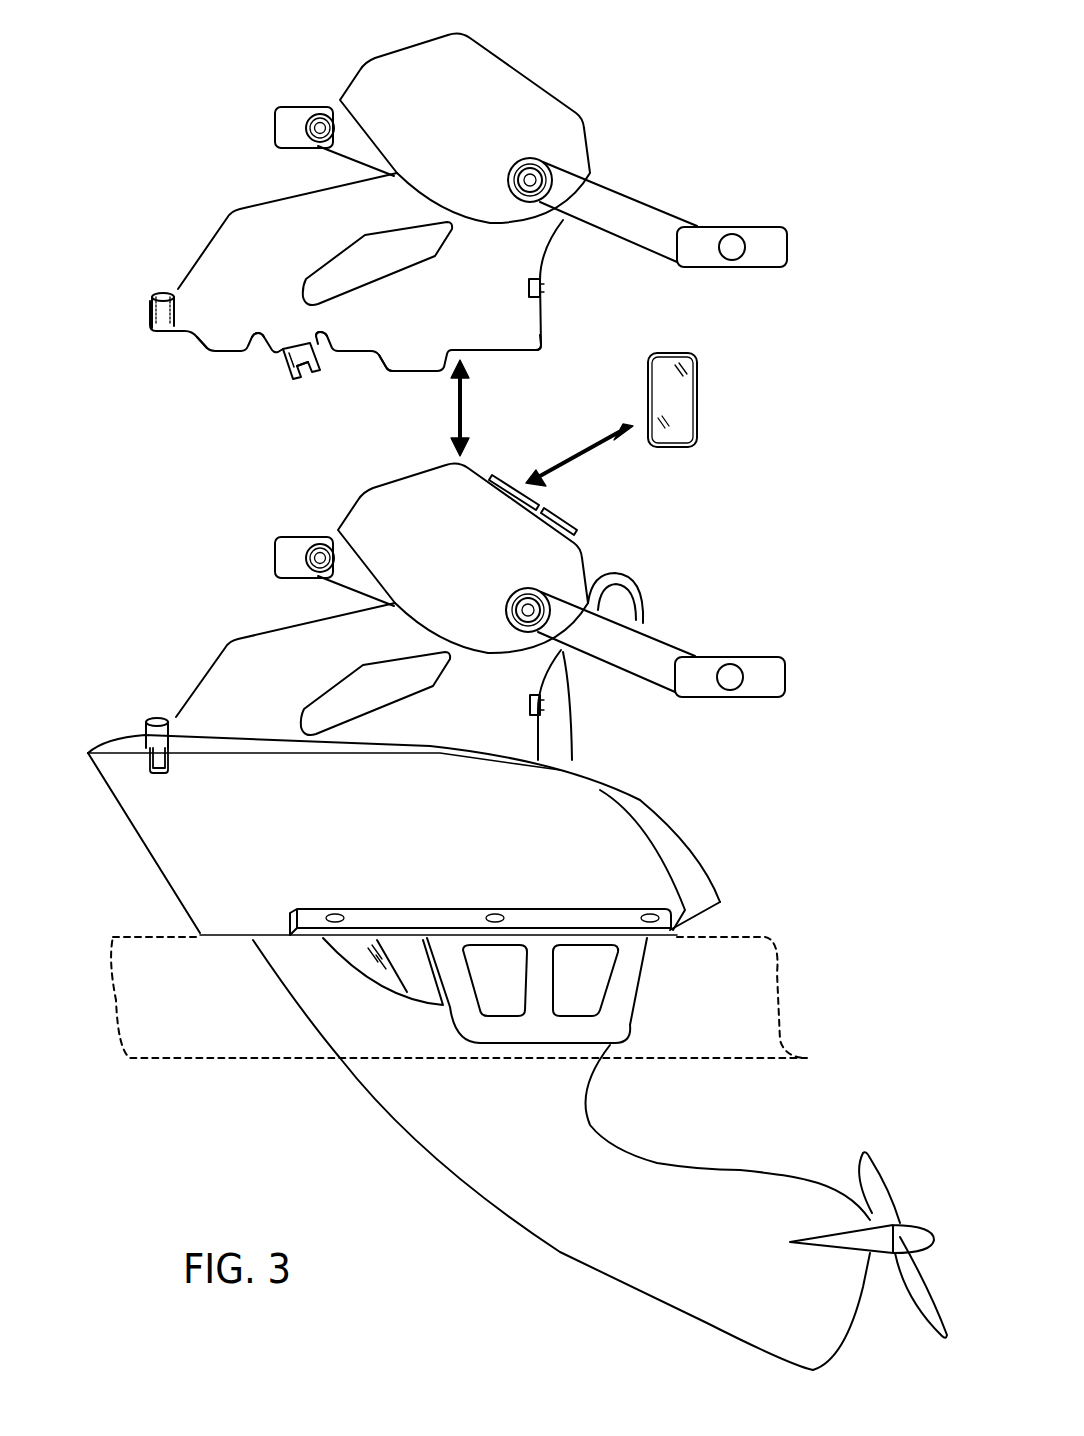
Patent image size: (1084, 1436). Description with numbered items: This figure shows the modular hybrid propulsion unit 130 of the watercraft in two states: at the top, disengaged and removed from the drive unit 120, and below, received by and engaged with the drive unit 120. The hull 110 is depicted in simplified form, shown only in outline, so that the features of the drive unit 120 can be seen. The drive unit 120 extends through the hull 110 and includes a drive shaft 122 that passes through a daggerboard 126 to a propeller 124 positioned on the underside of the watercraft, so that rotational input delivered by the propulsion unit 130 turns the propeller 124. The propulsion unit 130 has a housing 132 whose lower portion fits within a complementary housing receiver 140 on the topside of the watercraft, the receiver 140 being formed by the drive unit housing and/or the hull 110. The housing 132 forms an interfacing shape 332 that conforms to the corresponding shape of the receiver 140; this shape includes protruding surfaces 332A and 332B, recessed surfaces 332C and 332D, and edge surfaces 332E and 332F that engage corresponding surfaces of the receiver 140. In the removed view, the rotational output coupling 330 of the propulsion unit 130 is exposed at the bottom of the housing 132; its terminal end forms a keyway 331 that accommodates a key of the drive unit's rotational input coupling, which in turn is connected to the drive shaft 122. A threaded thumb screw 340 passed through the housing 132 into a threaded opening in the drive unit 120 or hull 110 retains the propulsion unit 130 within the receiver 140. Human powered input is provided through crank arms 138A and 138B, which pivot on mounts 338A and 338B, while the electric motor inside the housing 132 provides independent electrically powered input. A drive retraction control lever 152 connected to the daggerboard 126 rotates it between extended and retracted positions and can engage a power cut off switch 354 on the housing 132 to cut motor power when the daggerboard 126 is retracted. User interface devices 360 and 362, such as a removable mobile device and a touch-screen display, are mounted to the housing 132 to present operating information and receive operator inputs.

The hull 110 is at (250, 1058).
The drive unit 120 is at (750, 848).
The drive shaft 122 is at (377, 952).
The propeller 124 is at (908, 1230).
The daggerboard 126 is at (565, 1237).
The modular hybrid propulsion unit 130 is at (210, 167).
The housing 132 is at (467, 53).
The crank arm 138A is at (340, 117).
The crank arm 138B is at (663, 217).
The housing receiver 140 is at (210, 735).
The drive retraction control lever 152 is at (640, 590).
The rotational output coupling 330 is at (290, 373).
The keyway 331 is at (305, 392).
The interfacing shape 332 is at (149, 359).
The protruding surface 332A is at (212, 343).
The protruding surface 332B is at (407, 360).
The recessed surface 332C is at (258, 337).
The recessed surface 332D is at (320, 335).
The edge surface 332E is at (147, 317).
The edge surface 332F is at (542, 337).
The first mount 338A is at (293, 117).
The second mount 338B is at (773, 233).
The threaded thumb screw 340 is at (130, 716).
The power cut off switch 354 is at (545, 288).
The user interface device 360 is at (683, 413).
The user interface device 362 is at (559, 522).